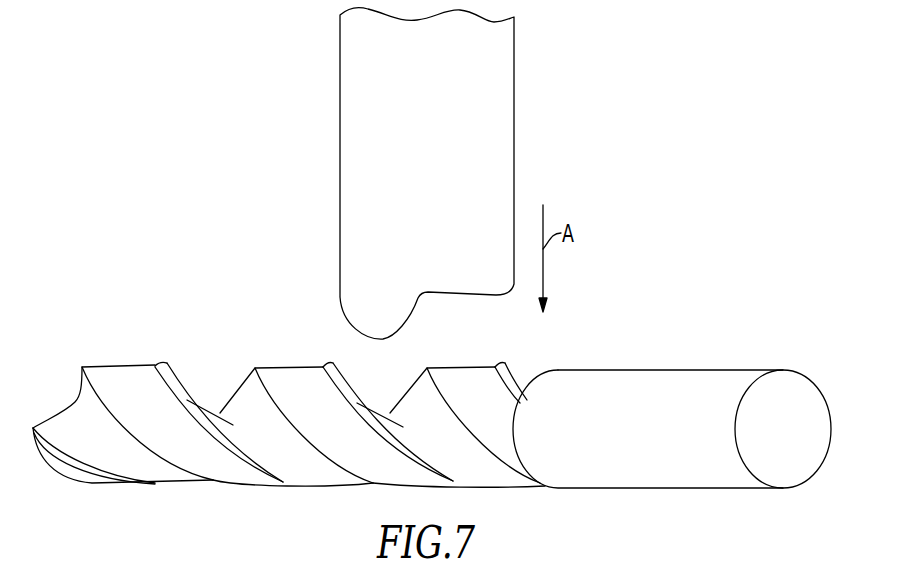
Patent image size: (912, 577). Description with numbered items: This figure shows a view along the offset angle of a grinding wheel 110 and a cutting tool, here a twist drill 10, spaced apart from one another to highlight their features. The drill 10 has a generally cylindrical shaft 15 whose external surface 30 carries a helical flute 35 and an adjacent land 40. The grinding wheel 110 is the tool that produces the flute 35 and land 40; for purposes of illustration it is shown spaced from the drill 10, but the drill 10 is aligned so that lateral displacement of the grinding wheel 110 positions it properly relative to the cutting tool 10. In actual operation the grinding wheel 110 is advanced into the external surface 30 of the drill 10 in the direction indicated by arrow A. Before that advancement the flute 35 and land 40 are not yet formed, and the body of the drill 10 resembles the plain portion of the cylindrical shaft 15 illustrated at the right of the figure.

The twist drill 10 is at (769, 307).
The cylindrical shaft 15 is at (674, 382).
The external surface 30 is at (640, 370).
The flute 35 is at (362, 392).
The land 40 is at (467, 368).
The grinding wheel 110 is at (514, 126).